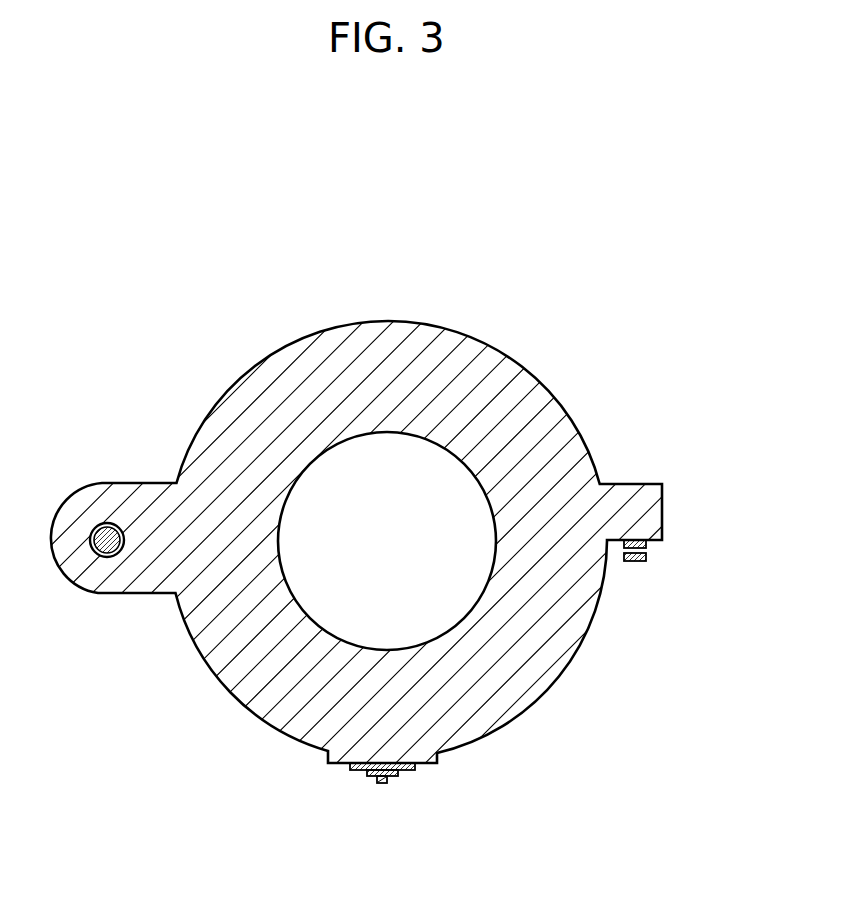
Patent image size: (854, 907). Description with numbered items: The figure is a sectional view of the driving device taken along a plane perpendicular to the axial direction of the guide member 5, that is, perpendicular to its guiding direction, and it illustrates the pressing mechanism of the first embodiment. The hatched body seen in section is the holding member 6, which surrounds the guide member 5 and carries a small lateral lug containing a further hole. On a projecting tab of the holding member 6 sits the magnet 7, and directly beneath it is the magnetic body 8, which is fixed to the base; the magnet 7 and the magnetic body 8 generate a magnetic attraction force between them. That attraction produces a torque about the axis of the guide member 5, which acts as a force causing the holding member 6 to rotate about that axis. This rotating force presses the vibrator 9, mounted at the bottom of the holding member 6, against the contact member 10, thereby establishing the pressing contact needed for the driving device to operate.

The guide member 5 is at (108, 522).
The holding member 6 is at (393, 336).
The magnet 7 is at (647, 544).
The magnetic body 8 is at (647, 557).
The vibrator 9 is at (400, 773).
The contact member 10 is at (382, 786).